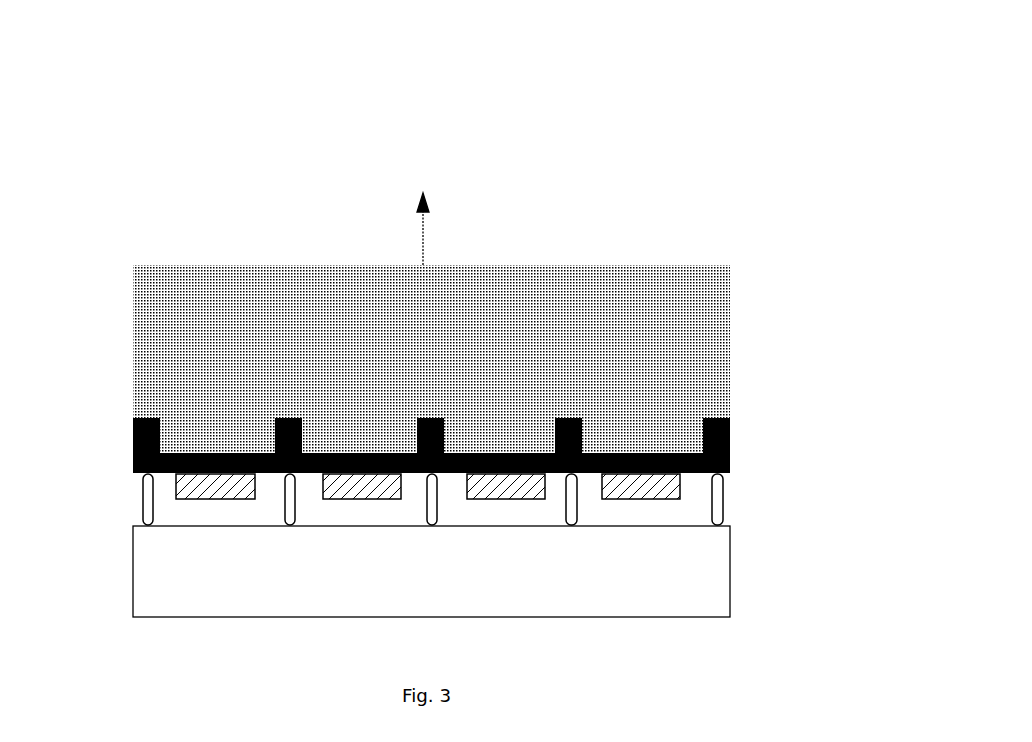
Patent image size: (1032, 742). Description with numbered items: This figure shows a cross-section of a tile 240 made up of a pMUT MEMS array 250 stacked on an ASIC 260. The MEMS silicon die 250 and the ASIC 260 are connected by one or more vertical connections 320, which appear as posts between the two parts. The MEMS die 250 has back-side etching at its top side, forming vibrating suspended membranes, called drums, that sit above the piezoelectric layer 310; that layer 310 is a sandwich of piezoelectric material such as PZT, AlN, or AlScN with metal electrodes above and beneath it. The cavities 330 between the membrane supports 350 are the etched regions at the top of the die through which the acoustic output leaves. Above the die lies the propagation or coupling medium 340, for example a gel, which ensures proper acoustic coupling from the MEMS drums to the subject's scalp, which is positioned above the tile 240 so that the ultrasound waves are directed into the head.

The tile 240 is at (462, 112).
The pMUT MEMS array 250 is at (730, 436).
The ASIC 260 is at (730, 580).
The piezoelectric layer 310 is at (657, 500).
The vertical connections 320 is at (283, 509).
The cavities 330 is at (330, 453).
The propagation or coupling medium 340 is at (152, 300).
The membrane supports 350 is at (133, 432).